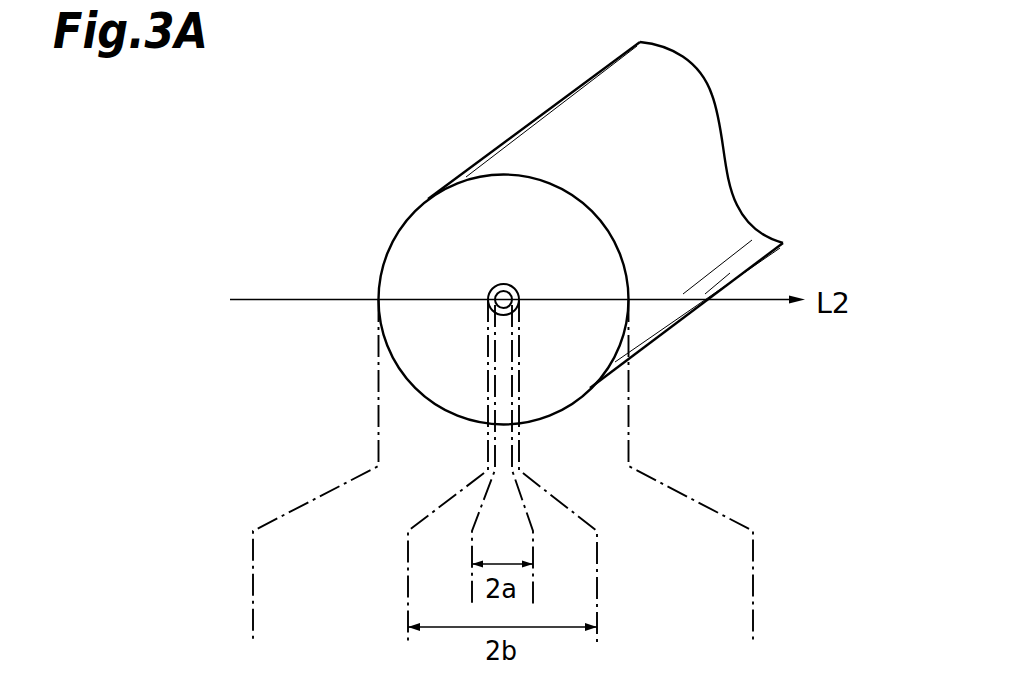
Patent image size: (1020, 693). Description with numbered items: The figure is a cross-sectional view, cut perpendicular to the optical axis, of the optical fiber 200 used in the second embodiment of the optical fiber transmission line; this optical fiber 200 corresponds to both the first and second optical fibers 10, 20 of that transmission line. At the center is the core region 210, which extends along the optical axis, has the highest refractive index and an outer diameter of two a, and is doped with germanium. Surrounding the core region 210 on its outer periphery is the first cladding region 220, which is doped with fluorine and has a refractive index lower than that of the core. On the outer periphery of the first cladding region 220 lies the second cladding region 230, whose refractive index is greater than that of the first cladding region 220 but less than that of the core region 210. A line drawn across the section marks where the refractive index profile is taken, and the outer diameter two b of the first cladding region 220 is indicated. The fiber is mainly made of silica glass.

The optical fiber 200 is at (504, 119).
The first optical fiber 10 is at (605, 215).
The second optical fiber 20 is at (605, 215).
The second cladding region 230 is at (434, 211).
The first cladding region 220 is at (500, 285).
The core region 210 is at (494, 291).